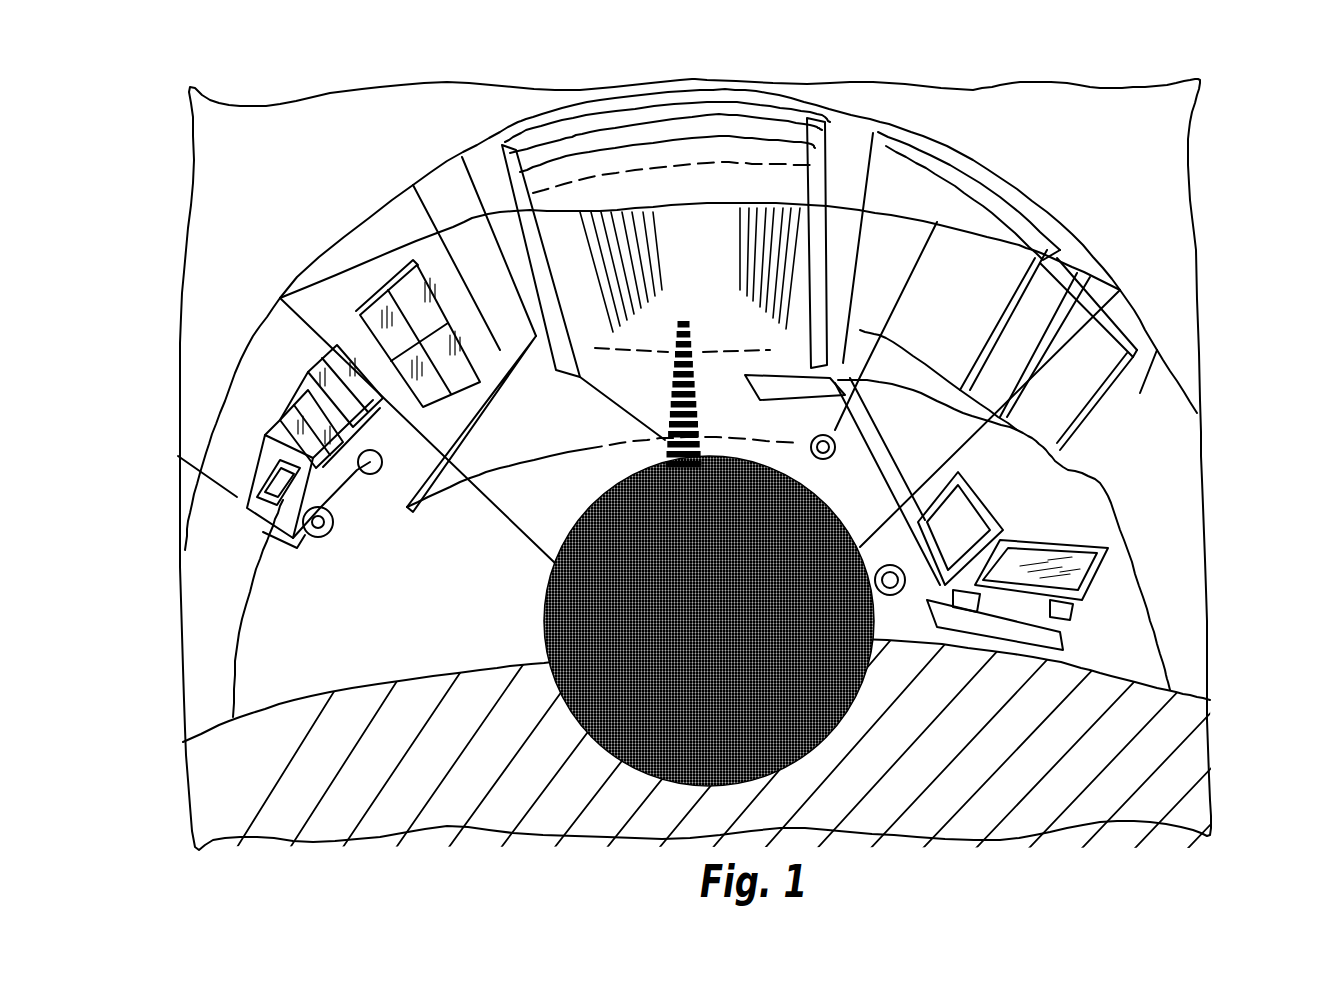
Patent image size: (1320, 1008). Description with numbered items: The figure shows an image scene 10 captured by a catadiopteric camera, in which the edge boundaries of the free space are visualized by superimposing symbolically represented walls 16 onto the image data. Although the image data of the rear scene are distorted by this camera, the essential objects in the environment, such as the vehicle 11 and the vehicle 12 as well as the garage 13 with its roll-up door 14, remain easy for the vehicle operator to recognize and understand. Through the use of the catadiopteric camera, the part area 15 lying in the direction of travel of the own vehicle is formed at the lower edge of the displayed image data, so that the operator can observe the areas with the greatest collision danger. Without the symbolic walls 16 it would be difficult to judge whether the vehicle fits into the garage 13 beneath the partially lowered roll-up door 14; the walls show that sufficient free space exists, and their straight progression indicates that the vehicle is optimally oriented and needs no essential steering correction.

The image scene 10 is at (1226, 216).
The vehicle 11 is at (233, 454).
The vehicle 12 is at (1082, 533).
The garage 13 is at (858, 148).
The roll-up door 14 is at (606, 154).
The part area 15 is at (475, 764).
The symbolic walls 16 is at (804, 339).